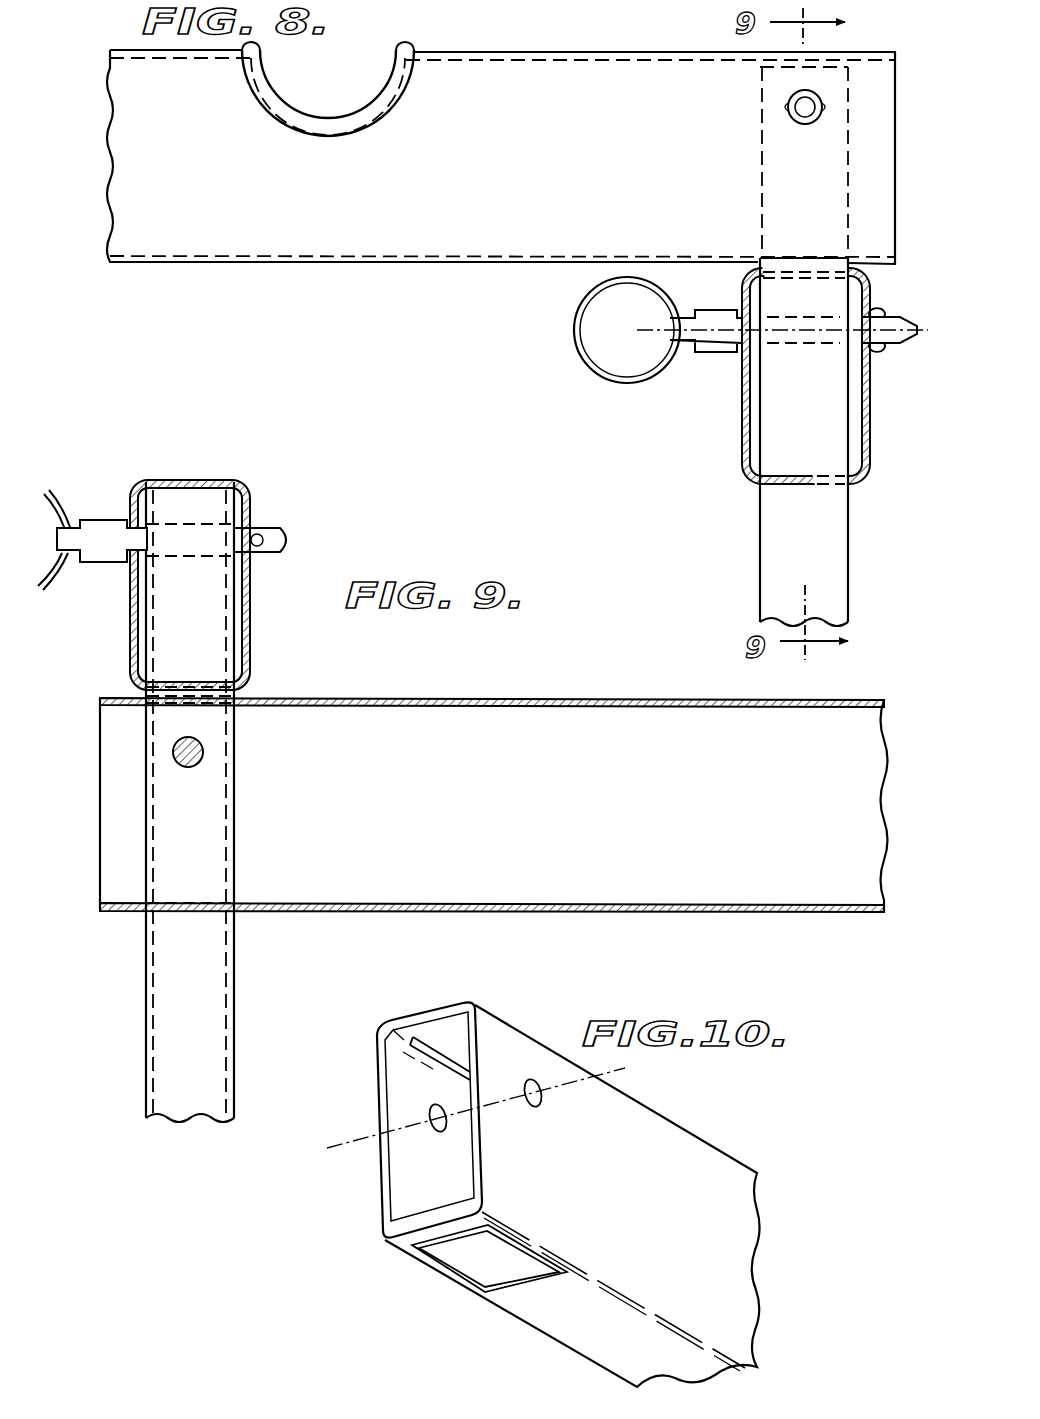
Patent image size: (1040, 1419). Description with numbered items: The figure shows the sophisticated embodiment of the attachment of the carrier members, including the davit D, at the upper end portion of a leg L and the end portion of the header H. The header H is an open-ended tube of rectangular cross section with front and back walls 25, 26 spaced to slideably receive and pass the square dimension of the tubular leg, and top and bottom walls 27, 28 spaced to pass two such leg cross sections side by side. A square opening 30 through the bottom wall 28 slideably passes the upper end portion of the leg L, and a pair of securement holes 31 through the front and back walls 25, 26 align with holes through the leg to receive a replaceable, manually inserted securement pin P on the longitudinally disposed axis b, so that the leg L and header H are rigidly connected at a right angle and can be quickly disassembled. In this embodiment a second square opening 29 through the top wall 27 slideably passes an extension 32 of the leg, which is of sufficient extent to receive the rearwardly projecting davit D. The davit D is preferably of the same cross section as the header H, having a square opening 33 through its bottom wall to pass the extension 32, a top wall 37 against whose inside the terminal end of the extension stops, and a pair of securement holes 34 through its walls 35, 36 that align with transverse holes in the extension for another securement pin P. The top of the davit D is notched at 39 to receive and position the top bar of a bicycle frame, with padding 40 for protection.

In FIG. 8, the front wall 25 is at (870, 418).
In FIG. 10, the front wall 25 is at (375, 1089).
In FIG. 8, the back wall 26 is at (742, 427).
In FIG. 10, the back wall 26 is at (733, 1237).
In FIG. 8, the top wall 27 is at (812, 268).
In FIG. 9, the top wall 27 is at (535, 700).
In FIG. 8, the bottom wall 28 is at (850, 485).
In FIG. 9, the bottom wall 28 is at (555, 912).
In FIG. 10, the bottom wall 28 is at (573, 1337).
In FIG. 9, the square opening 29 is at (222, 704).
In FIG. 10, the square opening 29 is at (447, 1040).
In FIG. 8, the square opening 30 is at (766, 485).
In FIG. 9, the square opening 30 is at (222, 910).
In FIG. 10, the square opening 30 is at (481, 1258).
In FIG. 10, the securement holes 31 is at (437, 1134).
In FIG. 8, the extension 32 is at (762, 163).
In FIG. 9, the extension 32 is at (140, 630).
In FIG. 9, the square opening 33 is at (225, 690).
In FIG. 8, the securement holes 34 is at (805, 120).
In FIG. 9, the securement holes 34 is at (252, 528).
In FIG. 9, the wall 35 is at (130, 598).
In FIG. 8, the wall 36 is at (566, 146).
In FIG. 9, the wall 36 is at (250, 583).
In FIG. 8, the top wall 37 is at (630, 50).
In FIG. 9, the top wall 37 is at (192, 480).
In FIG. 8, the notch 39 is at (300, 112).
In FIG. 8, the padding 40 is at (276, 78).
In FIG. 8, the davit D is at (272, 266).
In FIG. 9, the davit D is at (253, 486).
In FIG. 8, the header H is at (740, 455).
In FIG. 9, the header H is at (438, 698).
In FIG. 10, the header H is at (559, 1180).
In FIG. 8, the leg L is at (758, 560).
In FIG. 9, the leg L is at (144, 991).
In FIG. 8, the securement pin P is at (712, 358).
In FIG. 9, the securement pin P is at (292, 540).
In FIG. 8, the axis b is at (802, 332).
In FIG. 10, the axis b is at (337, 1150).